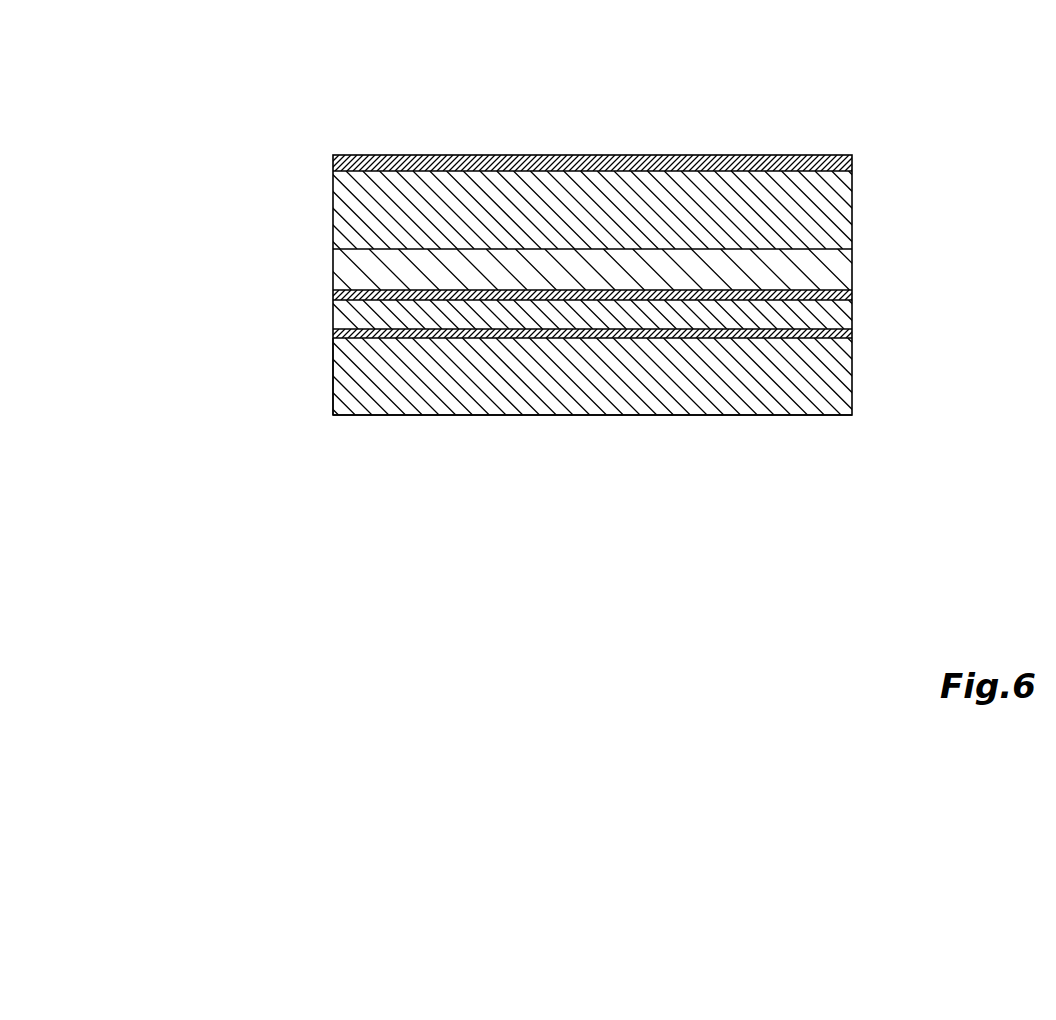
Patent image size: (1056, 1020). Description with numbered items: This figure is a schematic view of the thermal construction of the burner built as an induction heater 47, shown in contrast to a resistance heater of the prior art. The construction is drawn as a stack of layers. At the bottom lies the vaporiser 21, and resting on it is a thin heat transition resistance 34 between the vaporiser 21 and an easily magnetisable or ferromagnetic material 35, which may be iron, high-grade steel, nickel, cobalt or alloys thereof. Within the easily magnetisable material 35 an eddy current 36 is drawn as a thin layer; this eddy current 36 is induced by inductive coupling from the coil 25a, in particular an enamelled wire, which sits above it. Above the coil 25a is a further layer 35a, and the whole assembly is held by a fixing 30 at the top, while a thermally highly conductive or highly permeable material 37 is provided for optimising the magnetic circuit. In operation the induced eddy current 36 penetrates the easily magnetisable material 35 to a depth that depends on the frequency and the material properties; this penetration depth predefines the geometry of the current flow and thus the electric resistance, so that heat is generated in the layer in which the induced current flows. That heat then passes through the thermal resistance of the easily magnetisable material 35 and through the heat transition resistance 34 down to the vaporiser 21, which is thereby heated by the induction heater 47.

The fixing 30 is at (695, 167).
The upper substrate layer 35a is at (357, 212).
The coil 25a is at (395, 271).
The eddy current 36 is at (852, 295).
The easily magnetisable material 35 is at (377, 313).
The heat transition resistance 34 is at (852, 334).
The vaporiser 21 is at (572, 383).
The thermally highly conductive or highly permeable material 37 is at (420, 388).
The induction heater 47 is at (893, 463).